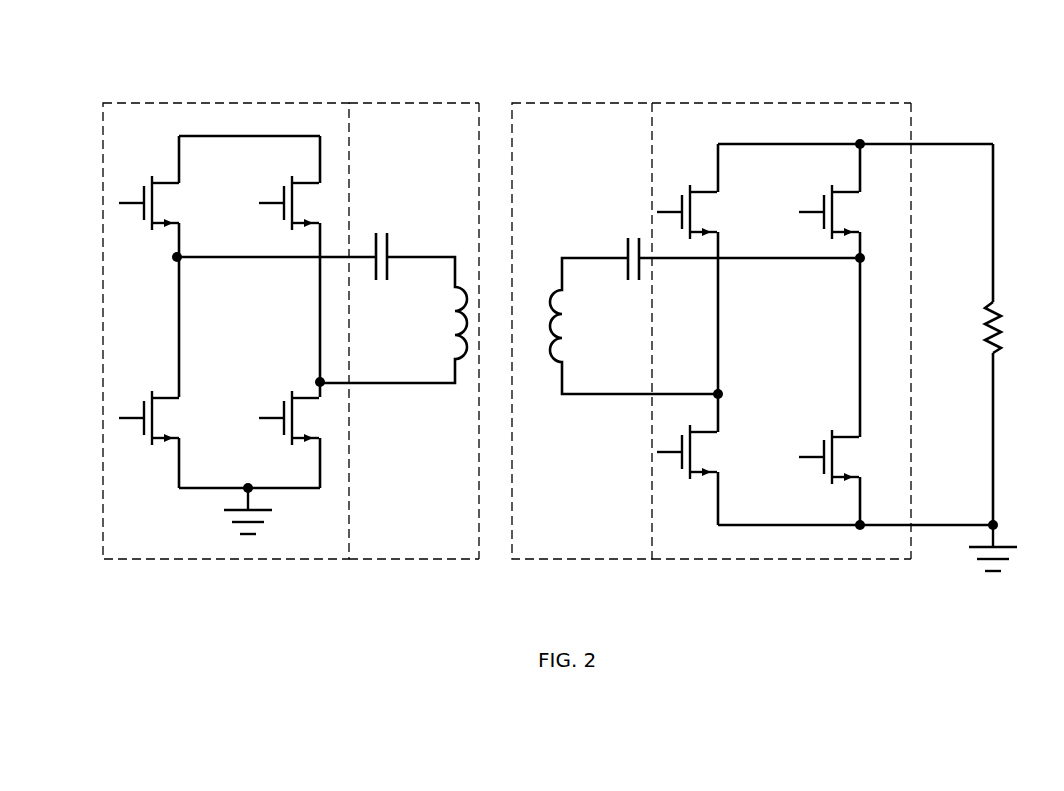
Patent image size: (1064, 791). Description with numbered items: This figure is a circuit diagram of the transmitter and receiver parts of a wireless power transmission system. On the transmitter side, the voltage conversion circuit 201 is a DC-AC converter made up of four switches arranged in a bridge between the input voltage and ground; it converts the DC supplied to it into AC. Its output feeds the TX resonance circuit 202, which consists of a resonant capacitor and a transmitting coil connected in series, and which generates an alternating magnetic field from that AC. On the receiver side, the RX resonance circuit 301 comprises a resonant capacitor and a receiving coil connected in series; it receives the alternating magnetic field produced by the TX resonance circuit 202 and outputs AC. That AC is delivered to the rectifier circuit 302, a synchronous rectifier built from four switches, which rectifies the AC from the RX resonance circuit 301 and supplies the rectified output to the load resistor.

The voltage conversion circuit 201 is at (281, 112).
The TX resonance circuit 202 is at (419, 112).
The RX resonance circuit 301 is at (585, 112).
The rectifier circuit 302 is at (775, 112).